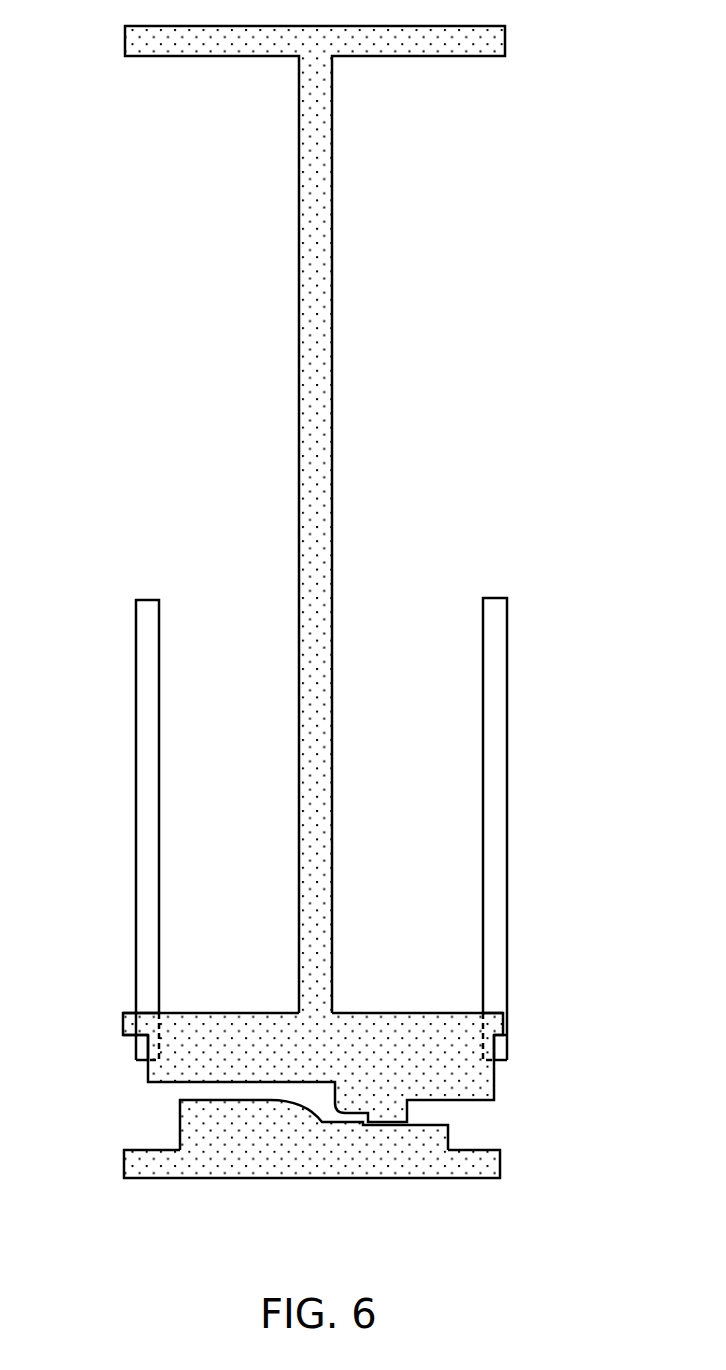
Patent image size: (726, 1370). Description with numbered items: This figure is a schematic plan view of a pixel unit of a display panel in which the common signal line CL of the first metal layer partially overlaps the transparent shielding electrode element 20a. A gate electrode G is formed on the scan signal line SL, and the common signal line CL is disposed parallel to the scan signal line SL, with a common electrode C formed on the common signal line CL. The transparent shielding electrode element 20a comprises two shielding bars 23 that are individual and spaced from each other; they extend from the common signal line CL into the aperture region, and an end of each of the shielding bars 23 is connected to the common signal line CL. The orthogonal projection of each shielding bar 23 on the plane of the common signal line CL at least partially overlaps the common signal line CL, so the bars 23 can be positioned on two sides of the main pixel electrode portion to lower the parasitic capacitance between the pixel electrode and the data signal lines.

The transparent shielding electrode element 20a is at (503, 588).
The shielding bar 23 is at (136, 793).
The common signal line CL is at (130, 1025).
The common electrode C is at (182, 1065).
The scan signal line SL is at (130, 1162).
The gate electrode G is at (260, 1137).